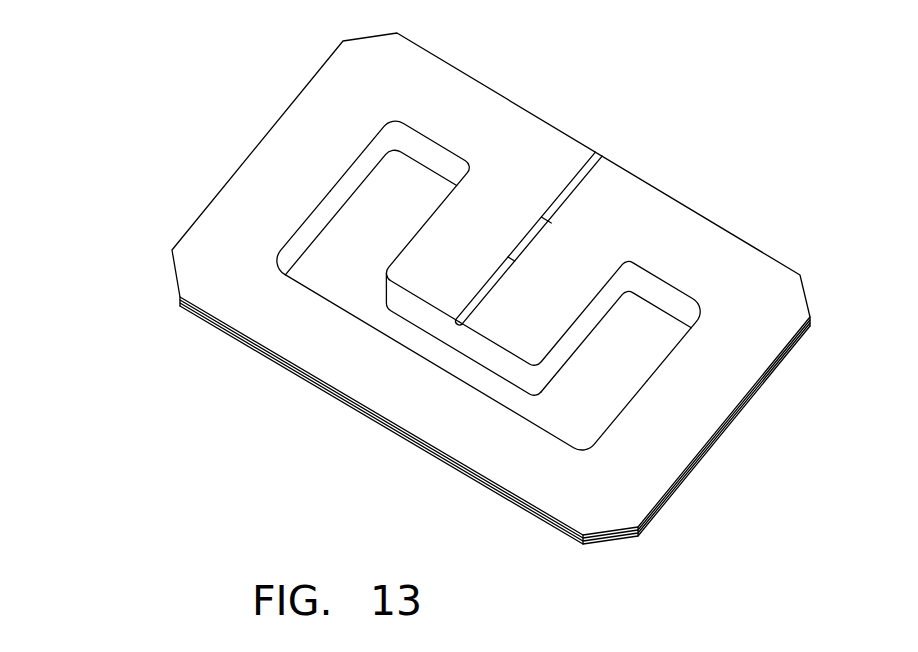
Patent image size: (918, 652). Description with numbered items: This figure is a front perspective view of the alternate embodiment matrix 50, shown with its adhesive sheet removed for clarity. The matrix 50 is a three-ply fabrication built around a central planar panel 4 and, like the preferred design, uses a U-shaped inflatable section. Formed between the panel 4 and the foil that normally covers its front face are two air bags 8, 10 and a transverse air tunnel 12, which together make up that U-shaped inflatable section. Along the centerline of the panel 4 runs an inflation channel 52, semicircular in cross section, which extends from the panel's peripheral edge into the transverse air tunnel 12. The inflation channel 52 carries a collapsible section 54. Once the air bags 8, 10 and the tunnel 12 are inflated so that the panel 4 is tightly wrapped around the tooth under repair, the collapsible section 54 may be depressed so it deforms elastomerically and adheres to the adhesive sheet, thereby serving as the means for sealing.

The alternate embodiment matrix 50 is at (143, 142).
The central planar panel 4 is at (265, 313).
The air bag 8 is at (410, 195).
The air bag 10 is at (643, 328).
The transverse air tunnel 12 is at (453, 363).
The inflation channel 52 is at (581, 173).
The collapsible section 54 is at (533, 237).